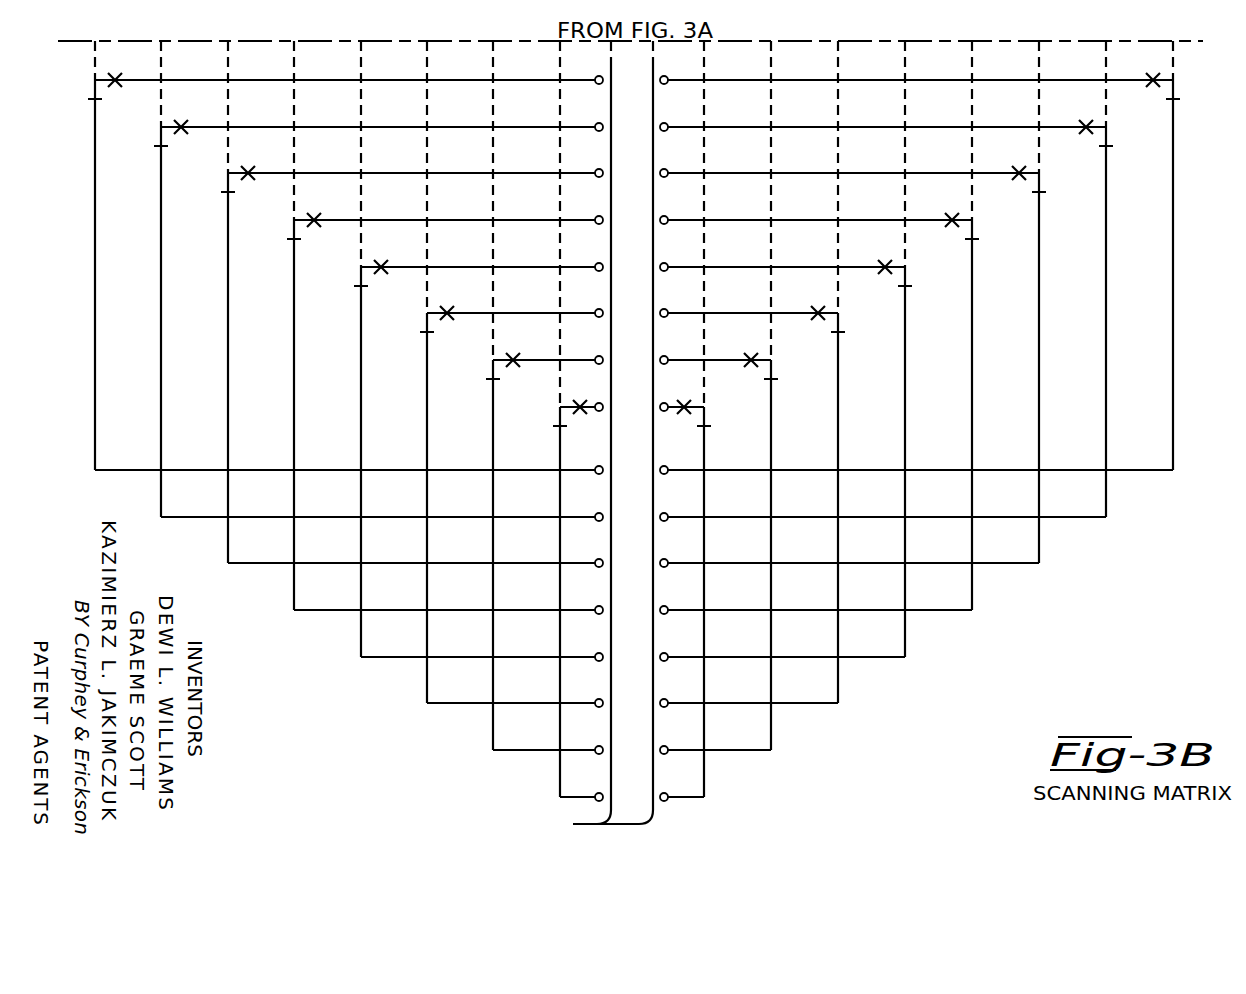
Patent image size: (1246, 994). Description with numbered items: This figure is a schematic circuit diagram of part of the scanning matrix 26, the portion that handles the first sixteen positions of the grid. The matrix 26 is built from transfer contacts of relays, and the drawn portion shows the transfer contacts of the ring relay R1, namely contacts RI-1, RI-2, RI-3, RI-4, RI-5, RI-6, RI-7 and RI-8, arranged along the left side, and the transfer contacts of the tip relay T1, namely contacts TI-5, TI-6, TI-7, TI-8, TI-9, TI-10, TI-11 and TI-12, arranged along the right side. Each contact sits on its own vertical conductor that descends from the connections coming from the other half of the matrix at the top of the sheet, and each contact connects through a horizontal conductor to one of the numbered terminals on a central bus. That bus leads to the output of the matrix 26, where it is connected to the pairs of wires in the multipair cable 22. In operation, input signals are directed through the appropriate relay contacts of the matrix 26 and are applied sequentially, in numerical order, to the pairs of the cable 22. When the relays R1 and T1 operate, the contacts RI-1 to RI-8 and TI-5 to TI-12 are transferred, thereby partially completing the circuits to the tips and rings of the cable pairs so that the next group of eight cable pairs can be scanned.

The scanning matrix 26 is at (639, 439).
The multipair cable 22 is at (533, 823).
The transfer contacts of relay R1 RI-1 is at (553, 419).
The transfer contacts of relay R1 RI-2 is at (520, 395).
The transfer contacts of relay R1 RI-3 is at (487, 372).
The transfer contacts of relay R1 RI-4 is at (454, 349).
The transfer contacts of relay R1 RI-5 is at (420, 325).
The transfer contacts of relay R1 RI-6 is at (387, 302).
The transfer contacts of relay R1 RI-7 is at (354, 279).
The transfer contacts of relay R1 RI-8 is at (321, 255).
The transfer contacts of relay T1 TI-5 is at (709, 419).
The transfer contacts of relay T1 TI-6 is at (742, 395).
The transfer contacts of relay T1 TI-7 is at (776, 372).
The transfer contacts of relay T1 TI-8 is at (809, 349).
The transfer contacts of relay T1 TI-9 is at (843, 325).
The transfer contacts of relay T1 TI-10 is at (883, 302).
The transfer contacts of relay T1 TI-11 is at (916, 279).
The transfer contacts of relay T1 TI-12 is at (950, 255).